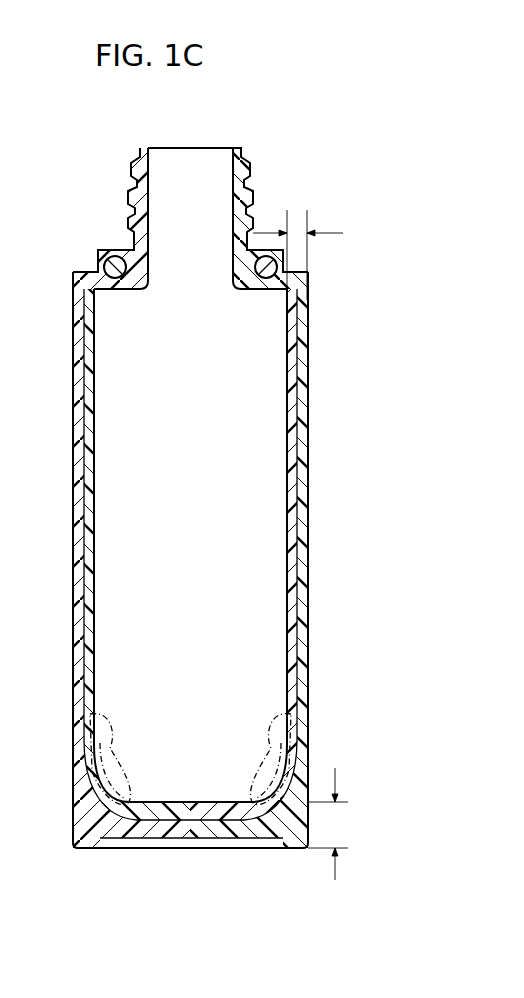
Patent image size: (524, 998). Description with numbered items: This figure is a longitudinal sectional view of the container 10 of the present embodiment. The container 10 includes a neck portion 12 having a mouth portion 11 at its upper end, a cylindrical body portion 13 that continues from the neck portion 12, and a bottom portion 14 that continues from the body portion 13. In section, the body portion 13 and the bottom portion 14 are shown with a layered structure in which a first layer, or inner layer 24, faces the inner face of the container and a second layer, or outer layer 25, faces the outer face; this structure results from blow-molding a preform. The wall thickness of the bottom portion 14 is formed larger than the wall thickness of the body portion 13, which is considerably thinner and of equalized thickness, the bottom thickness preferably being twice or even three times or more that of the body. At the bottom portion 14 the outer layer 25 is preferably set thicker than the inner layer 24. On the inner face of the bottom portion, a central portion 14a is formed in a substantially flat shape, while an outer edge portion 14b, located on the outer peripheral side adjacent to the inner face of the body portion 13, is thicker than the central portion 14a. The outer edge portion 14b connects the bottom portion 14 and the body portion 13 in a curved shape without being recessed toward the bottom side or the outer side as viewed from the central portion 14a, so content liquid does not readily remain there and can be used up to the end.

The container 10 is at (212, 502).
The mouth portion 11 is at (195, 163).
The neck portion 12 is at (253, 176).
The body portion 13 is at (230, 560).
The bottom portion 14 is at (192, 596).
The central portion 14a is at (190, 801).
The outer edge portion 14b is at (90, 713).
The first layer (inner layer) 24 is at (292, 522).
The second layer (outer layer) 25 is at (248, 832).